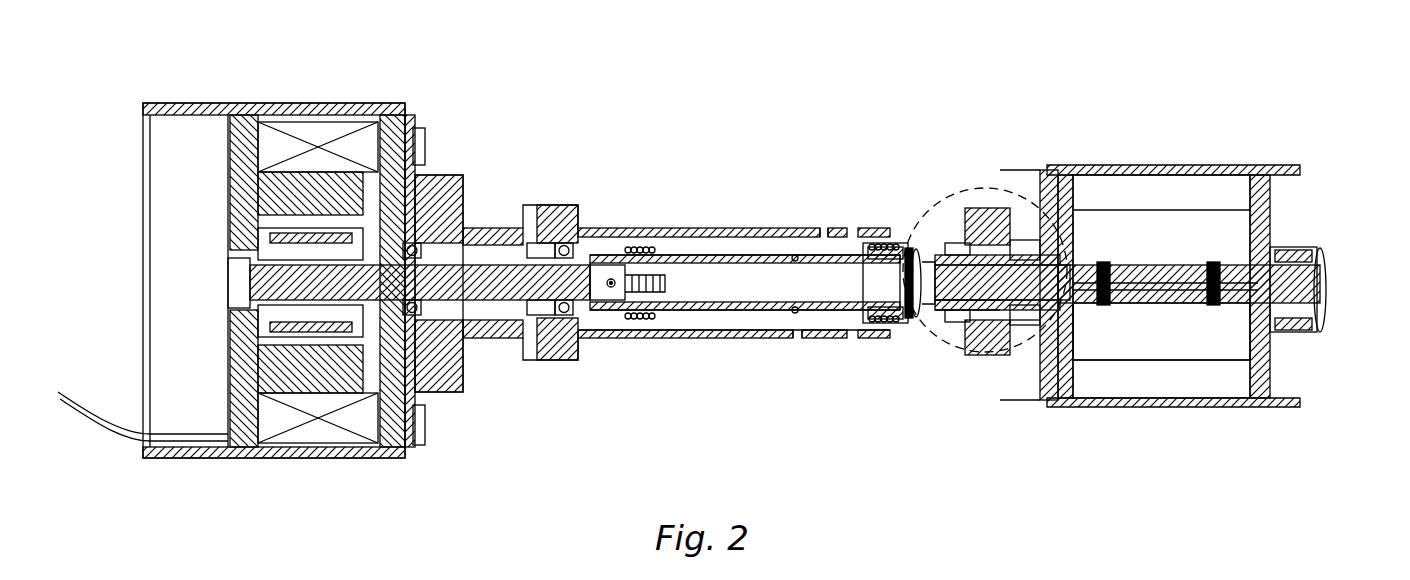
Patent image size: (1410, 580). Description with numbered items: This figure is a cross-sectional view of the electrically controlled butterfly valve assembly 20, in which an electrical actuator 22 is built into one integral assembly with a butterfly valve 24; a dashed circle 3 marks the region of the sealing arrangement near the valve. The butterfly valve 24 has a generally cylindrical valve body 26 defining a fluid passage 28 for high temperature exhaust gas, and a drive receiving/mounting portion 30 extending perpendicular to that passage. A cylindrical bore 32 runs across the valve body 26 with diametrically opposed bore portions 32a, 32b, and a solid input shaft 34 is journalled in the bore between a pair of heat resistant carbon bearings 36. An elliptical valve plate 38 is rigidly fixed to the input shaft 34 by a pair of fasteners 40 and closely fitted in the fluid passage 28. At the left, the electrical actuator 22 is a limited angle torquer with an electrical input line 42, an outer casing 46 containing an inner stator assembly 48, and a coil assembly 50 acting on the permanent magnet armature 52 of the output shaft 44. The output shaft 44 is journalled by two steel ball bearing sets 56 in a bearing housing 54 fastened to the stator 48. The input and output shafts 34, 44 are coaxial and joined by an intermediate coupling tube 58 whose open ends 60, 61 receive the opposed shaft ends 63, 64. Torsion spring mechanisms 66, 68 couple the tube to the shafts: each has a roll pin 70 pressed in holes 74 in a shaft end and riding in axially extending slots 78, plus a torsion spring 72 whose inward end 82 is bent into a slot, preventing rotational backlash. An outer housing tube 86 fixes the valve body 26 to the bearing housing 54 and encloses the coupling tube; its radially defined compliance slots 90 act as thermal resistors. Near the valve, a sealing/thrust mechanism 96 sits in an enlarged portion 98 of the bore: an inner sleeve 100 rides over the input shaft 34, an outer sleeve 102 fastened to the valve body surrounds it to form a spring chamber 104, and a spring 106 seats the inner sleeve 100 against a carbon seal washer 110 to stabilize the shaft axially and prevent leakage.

The section view circle 3 is at (1060, 185).
The drive assembly 20 is at (710, 122).
The electrical actuator 22 is at (352, 86).
The butterfly valve 24 is at (1284, 148).
The valve body 26 is at (1272, 193).
The fluid passage 28 is at (1220, 340).
The drive receiving/mounting portion 30 is at (960, 235).
The cylindrical bore 32 is at (1094, 305).
The diametrically opposed bore portion 32a is at (1080, 240).
The diametrically opposed bore portion 32b is at (1272, 242).
The input shaft 34 is at (1302, 290).
The heat resistant carbon bearings 36 is at (1075, 345).
The valve plate 38 is at (1150, 300).
The fasteners 40 is at (1214, 264).
The electrical input line 42 is at (170, 436).
The output shaft 44 is at (466, 266).
The outer casing 46 is at (358, 452).
The inner stator assembly 48 is at (412, 440).
The coil assembly 50 is at (322, 122).
The permanent magnet armature 52 is at (290, 250).
The bearing housing 54 is at (460, 378).
The steel ball bearing sets 56 is at (418, 240).
The intermediate coupling tube 58 is at (756, 256).
The open end 60 is at (542, 358).
The open end 61 is at (918, 352).
The shaft end 63 is at (612, 228).
The shaft end 64 is at (950, 230).
The torsion spring mechanism 66 is at (642, 332).
The torsion spring mechanism 68 is at (860, 334).
The roll pin 70 is at (600, 322).
The torsion spring 72 is at (640, 248).
The holes 74 is at (545, 256).
The axially extending slots 78 is at (702, 266).
The inward end 82 is at (806, 256).
The outer housing tube 86 is at (735, 340).
The compliance slots 90 is at (796, 338).
The sealing/thrust mechanism 96 is at (1000, 238).
The enlarged portion 98 is at (1013, 237).
The inner sleeve 100 is at (972, 324).
The outer sleeve 102 is at (950, 358).
The spring chamber 104 is at (962, 360).
The spring 106 is at (928, 350).
The seal washer 110 is at (1012, 360).